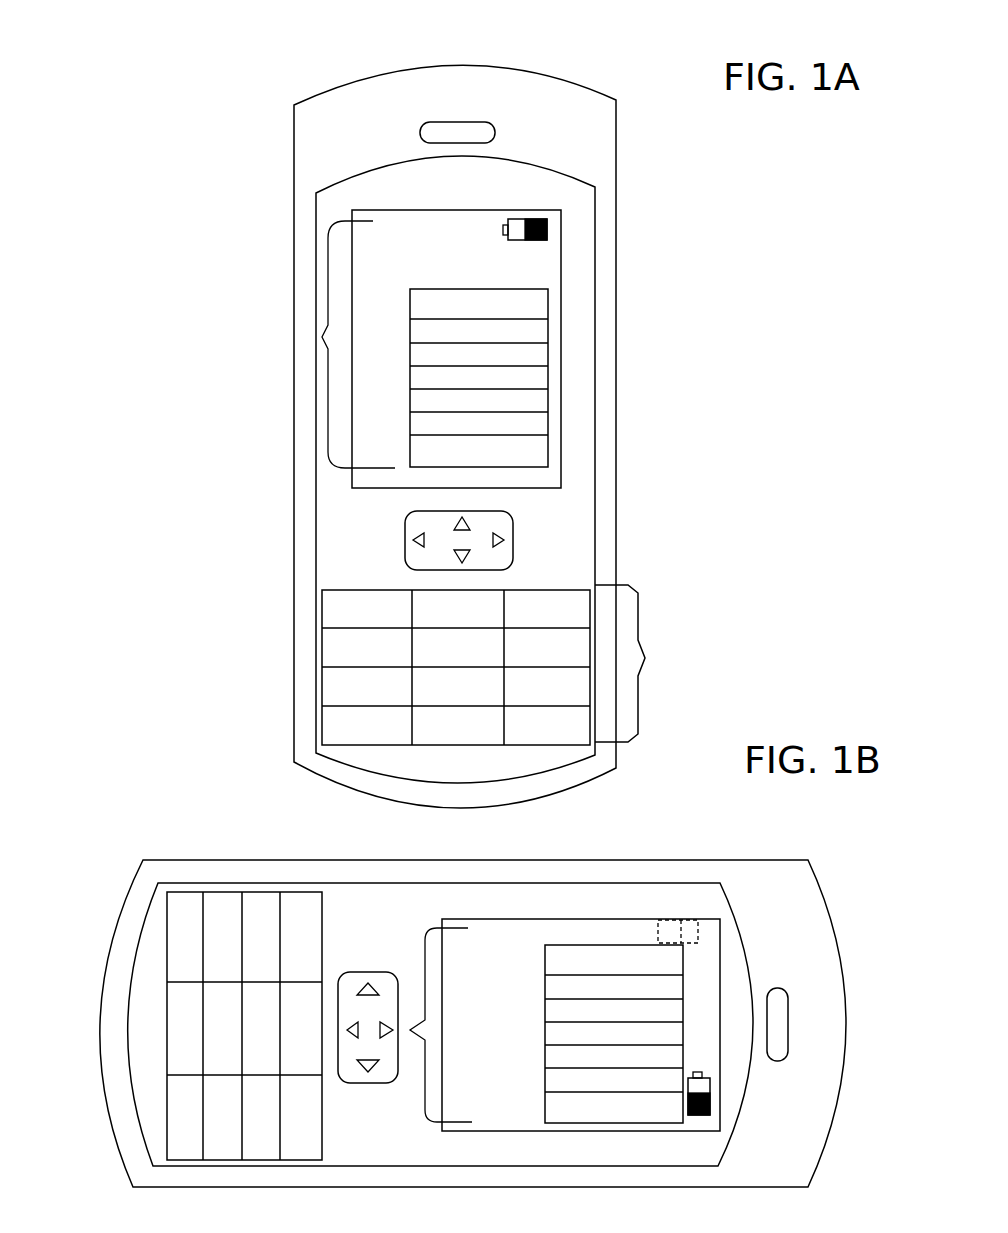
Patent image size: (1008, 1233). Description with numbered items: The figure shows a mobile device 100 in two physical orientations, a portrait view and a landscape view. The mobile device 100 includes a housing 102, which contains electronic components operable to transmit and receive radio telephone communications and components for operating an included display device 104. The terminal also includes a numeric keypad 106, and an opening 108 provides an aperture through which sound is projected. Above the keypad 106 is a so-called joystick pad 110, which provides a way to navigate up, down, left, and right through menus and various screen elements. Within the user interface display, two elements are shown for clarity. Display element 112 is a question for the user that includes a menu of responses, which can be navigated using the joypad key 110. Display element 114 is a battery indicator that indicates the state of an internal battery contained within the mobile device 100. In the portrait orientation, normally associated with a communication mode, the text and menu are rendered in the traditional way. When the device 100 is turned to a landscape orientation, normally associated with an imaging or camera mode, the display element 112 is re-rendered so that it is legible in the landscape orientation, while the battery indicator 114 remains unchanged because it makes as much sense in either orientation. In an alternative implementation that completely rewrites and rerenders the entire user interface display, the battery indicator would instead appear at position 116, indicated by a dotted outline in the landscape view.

In FIG. 1A, the mobile device 100 is at (254, 186).
In FIG. 1B, the mobile device 100 is at (746, 842).
In FIG. 1A, the housing 102 is at (585, 88).
In FIG. 1B, the housing 102 is at (823, 1143).
In FIG. 1A, the display device 104 is at (561, 335).
In FIG. 1B, the display device 104 is at (521, 919).
In FIG. 1A, the numeric keypad 106 is at (645, 658).
In FIG. 1B, the numeric keypad 106 is at (332, 858).
In FIG. 1A, the opening 108 is at (420, 138).
In FIG. 1B, the opening 108 is at (778, 984).
In FIG. 1A, the joystick pad 110 is at (405, 540).
In FIG. 1B, the joystick pad 110 is at (378, 972).
In FIG. 1A, the display element 112 is at (322, 337).
In FIG. 1B, the display element 112 is at (412, 1032).
In FIG. 1A, the battery indicator 114 is at (547, 230).
In FIG. 1B, the battery indicator 114 is at (697, 1115).
In FIG. 1B, the position 116 is at (660, 919).